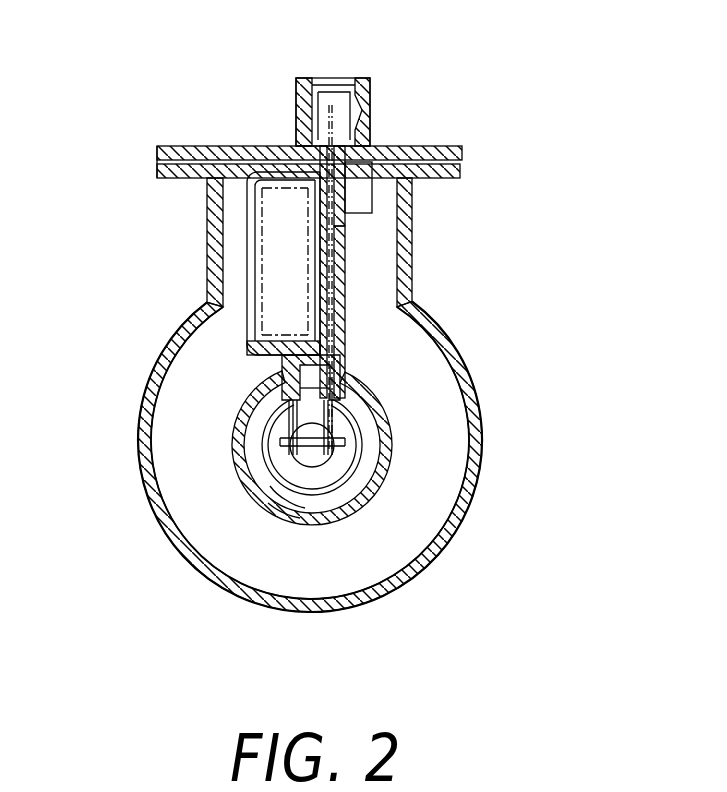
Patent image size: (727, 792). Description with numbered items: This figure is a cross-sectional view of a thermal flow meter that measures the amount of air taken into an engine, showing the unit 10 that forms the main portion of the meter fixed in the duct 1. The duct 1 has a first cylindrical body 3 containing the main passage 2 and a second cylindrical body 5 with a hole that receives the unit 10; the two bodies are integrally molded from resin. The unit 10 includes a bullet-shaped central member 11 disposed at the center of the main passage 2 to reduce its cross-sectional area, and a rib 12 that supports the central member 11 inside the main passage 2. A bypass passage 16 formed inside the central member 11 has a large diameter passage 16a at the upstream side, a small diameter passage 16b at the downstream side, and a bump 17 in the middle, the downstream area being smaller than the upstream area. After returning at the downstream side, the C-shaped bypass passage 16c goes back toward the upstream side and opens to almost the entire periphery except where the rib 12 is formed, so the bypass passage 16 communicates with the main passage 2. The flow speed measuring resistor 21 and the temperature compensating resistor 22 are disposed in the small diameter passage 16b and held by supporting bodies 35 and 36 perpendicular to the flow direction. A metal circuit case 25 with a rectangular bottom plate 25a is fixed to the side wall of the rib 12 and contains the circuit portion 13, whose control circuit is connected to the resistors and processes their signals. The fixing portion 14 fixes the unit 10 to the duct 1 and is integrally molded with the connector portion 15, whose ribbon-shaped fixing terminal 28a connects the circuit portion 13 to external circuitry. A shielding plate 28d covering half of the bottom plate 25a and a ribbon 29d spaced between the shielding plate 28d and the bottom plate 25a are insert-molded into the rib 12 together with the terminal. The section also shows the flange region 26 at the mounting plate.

The duct 1 is at (142, 370).
The main passage 2 is at (362, 508).
The first cylindrical body 3 is at (410, 322).
The second cylindrical body 5 is at (215, 262).
The unit 10 is at (160, 136).
The central member 11 is at (392, 560).
The rib 12 is at (345, 246).
The circuit portion 13 is at (280, 278).
The fixing portion 14 is at (215, 150).
The connector portion 15 is at (306, 78).
The bypass passage 16 is at (328, 512).
The large diameter passage 16a is at (278, 493).
The small diameter passage 16b is at (293, 507).
The C-shaped bypass passage 16c is at (285, 522).
The bump 17 is at (293, 520).
The flow speed measuring resistor 21 is at (357, 394).
The temperature compensating resistor 22 is at (350, 475).
The circuit case 25 is at (275, 165).
The bottom plate 25a is at (345, 230).
The flange plate 26 is at (165, 182).
The fixing terminal 28a is at (334, 100).
The shielding plate 28d is at (345, 284).
The ribbon 29d is at (263, 228).
The supporting body 35 is at (290, 412).
The supporting body 36 is at (293, 462).